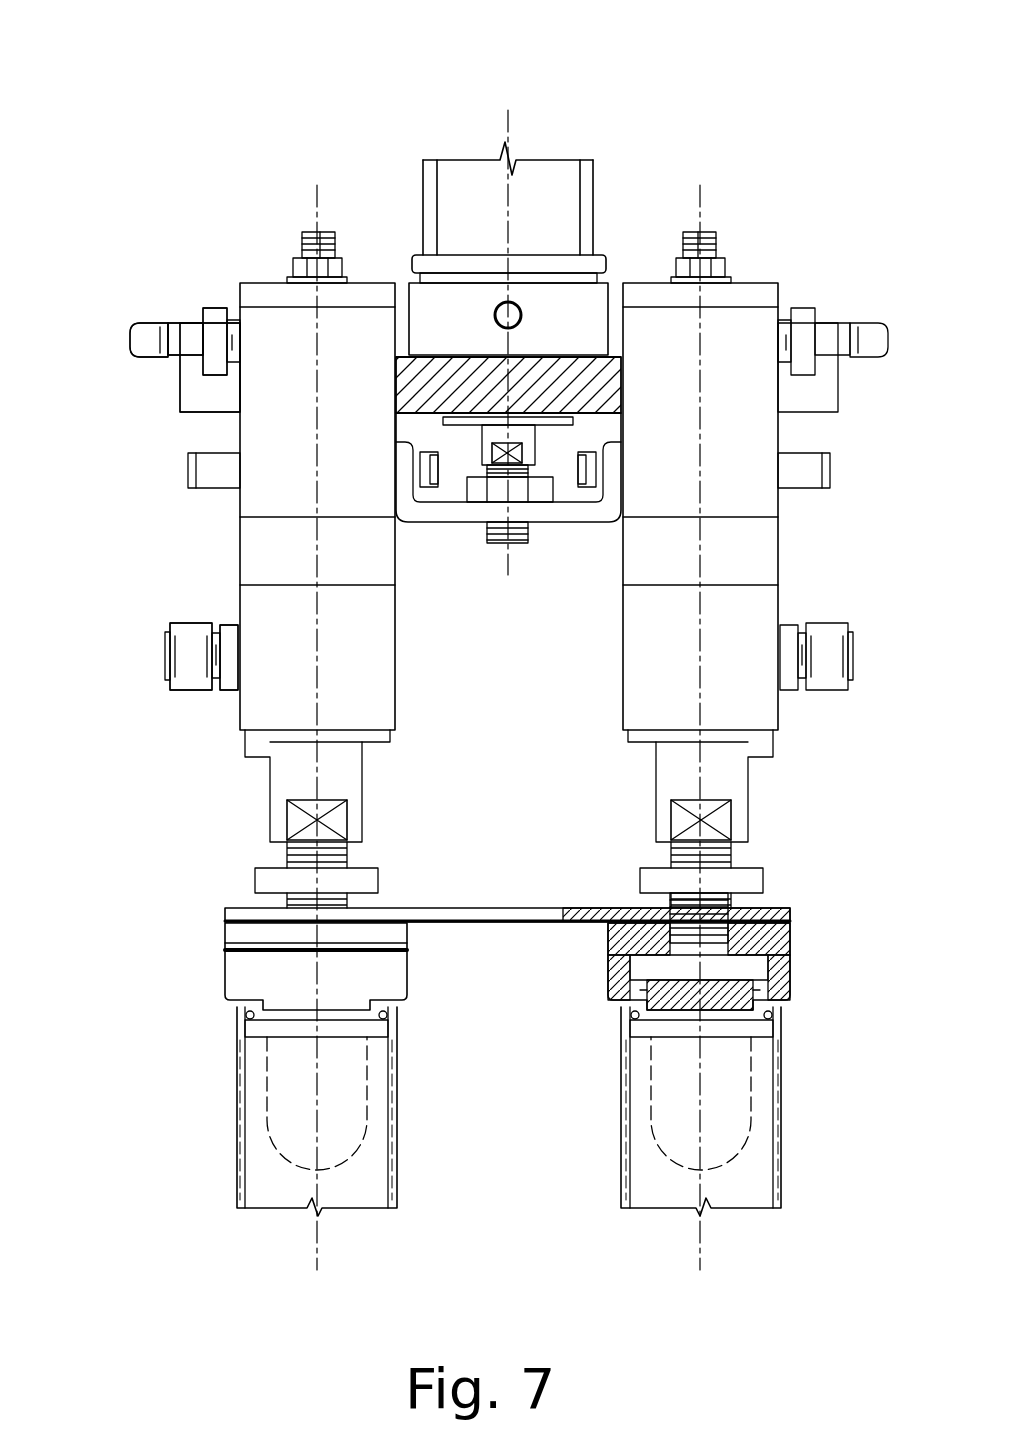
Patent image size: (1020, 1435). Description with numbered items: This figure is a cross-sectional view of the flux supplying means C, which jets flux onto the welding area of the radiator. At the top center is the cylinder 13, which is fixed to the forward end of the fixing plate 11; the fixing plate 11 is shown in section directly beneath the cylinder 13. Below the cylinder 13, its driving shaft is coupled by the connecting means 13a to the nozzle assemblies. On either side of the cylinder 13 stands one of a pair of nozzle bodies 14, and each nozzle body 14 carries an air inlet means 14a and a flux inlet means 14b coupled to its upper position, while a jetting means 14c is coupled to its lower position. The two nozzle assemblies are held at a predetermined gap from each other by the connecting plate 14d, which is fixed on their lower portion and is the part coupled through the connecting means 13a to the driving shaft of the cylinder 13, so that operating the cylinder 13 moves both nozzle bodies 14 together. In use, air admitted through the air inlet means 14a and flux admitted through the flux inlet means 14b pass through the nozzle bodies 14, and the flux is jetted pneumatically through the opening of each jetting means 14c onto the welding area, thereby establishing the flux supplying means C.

The fixing plate 11 is at (605, 392).
The cylinder 13 is at (557, 173).
The connecting means 13a is at (452, 512).
The nozzle bodies 14 is at (236, 517).
The air inlet means 14a is at (183, 332).
The flux inlet means 14b is at (192, 665).
The jetting means 14c is at (240, 977).
The connecting plate 14d is at (502, 923).
The flux supplying means C is at (724, 183).